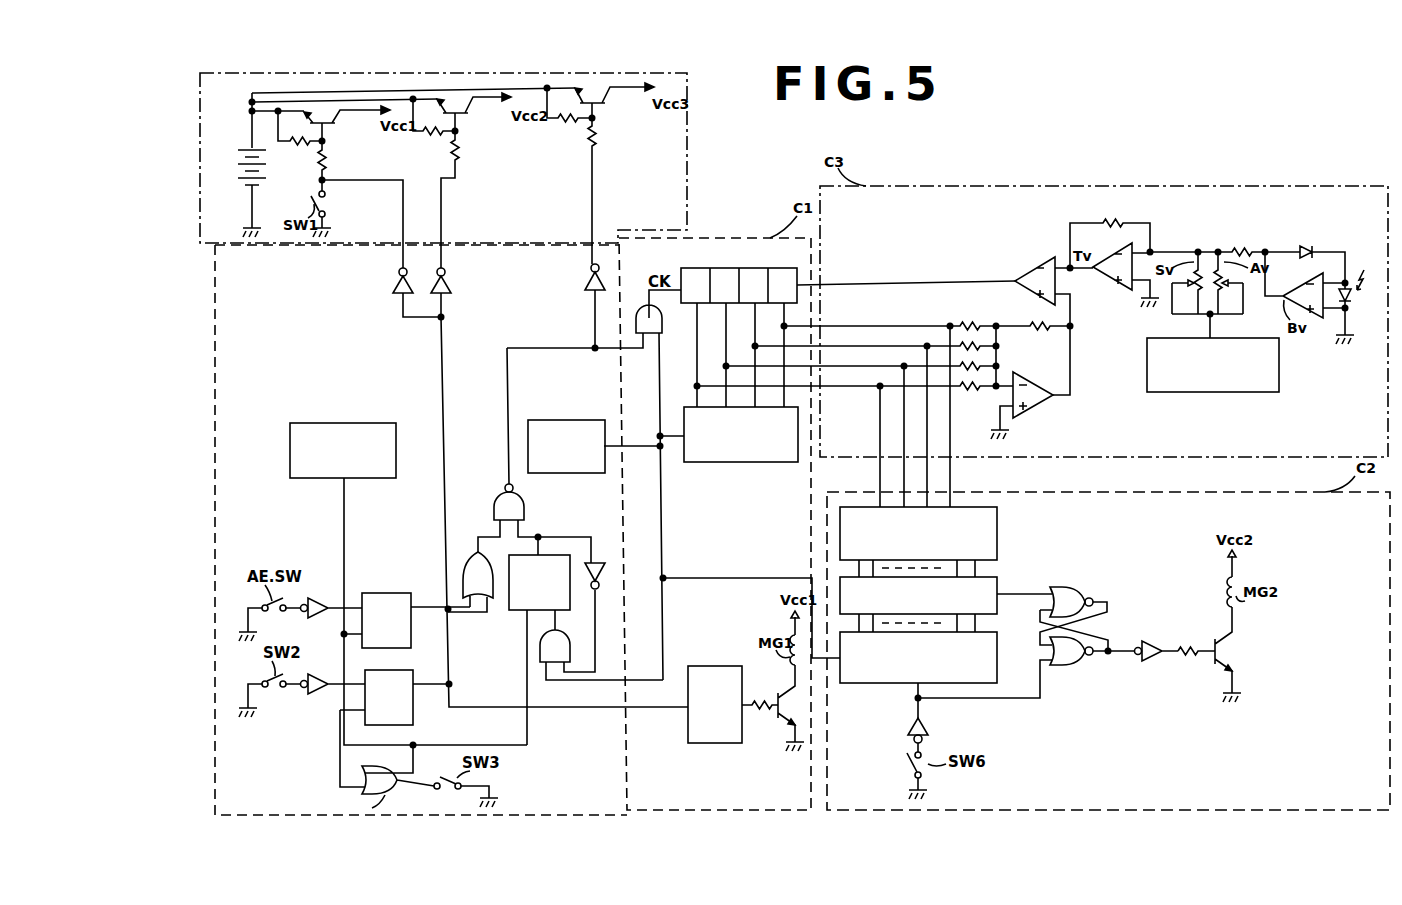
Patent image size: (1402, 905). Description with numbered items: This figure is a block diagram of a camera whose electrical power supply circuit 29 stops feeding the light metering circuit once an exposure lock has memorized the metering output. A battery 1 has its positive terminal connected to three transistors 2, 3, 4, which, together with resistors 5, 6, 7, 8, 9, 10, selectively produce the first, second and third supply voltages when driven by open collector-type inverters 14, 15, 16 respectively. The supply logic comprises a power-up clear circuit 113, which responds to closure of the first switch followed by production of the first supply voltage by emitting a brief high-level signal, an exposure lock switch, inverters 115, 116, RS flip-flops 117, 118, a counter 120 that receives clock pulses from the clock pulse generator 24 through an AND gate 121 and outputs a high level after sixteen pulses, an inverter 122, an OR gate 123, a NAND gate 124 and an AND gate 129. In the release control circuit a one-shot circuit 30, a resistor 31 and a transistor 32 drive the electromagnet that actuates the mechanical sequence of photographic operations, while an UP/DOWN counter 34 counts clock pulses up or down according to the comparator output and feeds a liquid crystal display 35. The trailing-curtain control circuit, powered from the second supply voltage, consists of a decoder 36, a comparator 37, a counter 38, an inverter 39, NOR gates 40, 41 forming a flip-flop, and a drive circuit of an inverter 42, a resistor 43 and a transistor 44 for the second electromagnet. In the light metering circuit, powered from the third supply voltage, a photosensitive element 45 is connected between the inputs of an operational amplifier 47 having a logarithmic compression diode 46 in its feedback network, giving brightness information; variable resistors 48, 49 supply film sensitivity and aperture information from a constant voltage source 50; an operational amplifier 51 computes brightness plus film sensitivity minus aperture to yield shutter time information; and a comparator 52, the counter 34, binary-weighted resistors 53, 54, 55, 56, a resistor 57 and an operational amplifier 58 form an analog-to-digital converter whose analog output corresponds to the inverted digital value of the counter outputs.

The battery 1 is at (248, 166).
The transistor 2 is at (336, 126).
The transistor 3 is at (470, 113).
The transistor 4 is at (604, 104).
The resistor 5 is at (298, 150).
The resistor 6 is at (330, 162).
The resistor 7 is at (432, 140).
The resistor 8 is at (463, 153).
The resistor 9 is at (568, 128).
The resistor 10 is at (602, 140).
The open collector-type inverter 14 is at (398, 284).
The open collector-type inverter 15 is at (447, 284).
The open collector-type inverter 16 is at (583, 284).
The clock pulse generator 24 is at (580, 420).
The electrical power supply circuit 29 is at (689, 118).
The one-shot circuit 30 is at (698, 744).
The resistor 31 is at (762, 712).
The transistor 32 is at (792, 708).
The UP/DOWN counter 34 is at (786, 270).
The liquid crystal display 35 is at (710, 463).
The decoder 36 is at (997, 520).
The comparator 37 is at (997, 578).
The counter 38 is at (997, 640).
The inverter 39 is at (929, 726).
The NOR gate 40 is at (1068, 588).
The NOR gate 41 is at (1060, 667).
The inverter 42 is at (1149, 662).
The resistor 43 is at (1186, 640).
The transistor 44 is at (1228, 648).
The photosensitive element 45 is at (1352, 302).
The logarithmic compression diode 46 is at (1305, 246).
The operational amplifier 47 is at (1312, 320).
The variable resistor 48 is at (1226, 298).
The variable resistor 49 is at (1190, 300).
The constant voltage source 50 is at (1175, 392).
The operational amplifier 51 is at (1114, 281).
The comparator 52 is at (1035, 264).
The resistor 53 is at (970, 318).
The resistor 54 is at (978, 337).
The resistor 55 is at (978, 357).
The resistor 56 is at (967, 394).
The resistor 57 is at (1032, 318).
The operational amplifier 58 is at (1043, 406).
The power-up clear circuit 113 is at (372, 423).
The inverter 115 is at (314, 696).
The inverter 116 is at (319, 600).
The RS flip-flop 117 is at (397, 593).
The RS flip-flop 118 is at (413, 718).
The counter 120 is at (514, 612).
The AND gate 121 is at (570, 650).
The inverter 122 is at (601, 570).
The OR gate 123 is at (466, 560).
The NAND gate 124 is at (526, 497).
The AND gate 129 is at (662, 326).